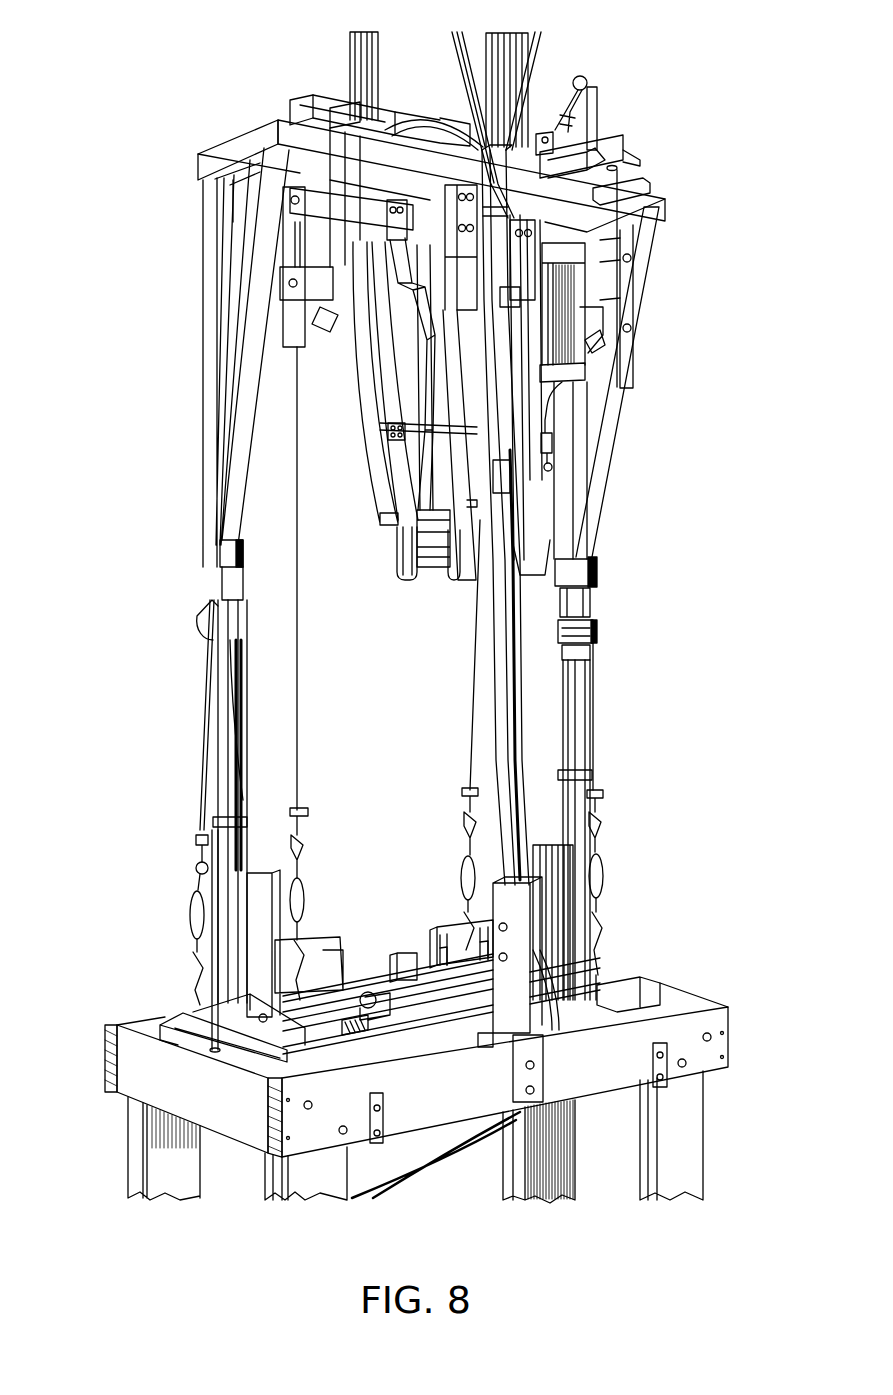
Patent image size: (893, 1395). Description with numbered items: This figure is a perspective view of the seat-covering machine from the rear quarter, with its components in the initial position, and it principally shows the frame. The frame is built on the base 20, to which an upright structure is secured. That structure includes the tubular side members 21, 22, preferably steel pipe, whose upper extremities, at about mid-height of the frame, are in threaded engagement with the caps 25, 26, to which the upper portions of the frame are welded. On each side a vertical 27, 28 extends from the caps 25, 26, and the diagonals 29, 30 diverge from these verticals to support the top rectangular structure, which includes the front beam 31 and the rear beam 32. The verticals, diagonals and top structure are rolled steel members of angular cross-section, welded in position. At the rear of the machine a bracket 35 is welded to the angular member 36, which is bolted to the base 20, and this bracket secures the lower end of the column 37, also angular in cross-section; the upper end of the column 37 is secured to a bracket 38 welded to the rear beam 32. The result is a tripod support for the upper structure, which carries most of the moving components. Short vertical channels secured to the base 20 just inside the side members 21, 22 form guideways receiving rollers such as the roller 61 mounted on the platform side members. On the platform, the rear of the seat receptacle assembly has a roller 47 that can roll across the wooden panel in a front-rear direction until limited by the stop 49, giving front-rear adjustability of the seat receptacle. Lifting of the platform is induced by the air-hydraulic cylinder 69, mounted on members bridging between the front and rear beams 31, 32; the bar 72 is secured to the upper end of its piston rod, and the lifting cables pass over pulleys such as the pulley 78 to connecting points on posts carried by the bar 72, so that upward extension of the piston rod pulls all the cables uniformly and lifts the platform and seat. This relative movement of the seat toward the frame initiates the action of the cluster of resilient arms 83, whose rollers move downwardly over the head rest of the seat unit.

The base 20 is at (680, 1000).
The tubular side member 21 is at (217, 782).
The tubular side member 22 is at (583, 695).
The cap 25 is at (220, 557).
The cap 26 is at (582, 575).
The vertical 27 is at (203, 460).
The vertical 28 is at (570, 480).
The diagonal 29 is at (237, 413).
The diagonal 30 is at (613, 410).
The front beam 31 is at (290, 118).
The rear beam 32 is at (238, 167).
The bracket 35 is at (493, 910).
The angular member 36 is at (545, 1068).
The column 37 is at (500, 697).
The bracket 38 is at (452, 130).
The roller 47 is at (373, 1017).
The stop 49 is at (380, 1024).
The roller 61 is at (260, 1022).
The air-hydraulic cylinder 69 is at (553, 300).
The bar 72 is at (620, 136).
The pulley 78 is at (546, 133).
The cluster of resilient arms 83 is at (432, 586).